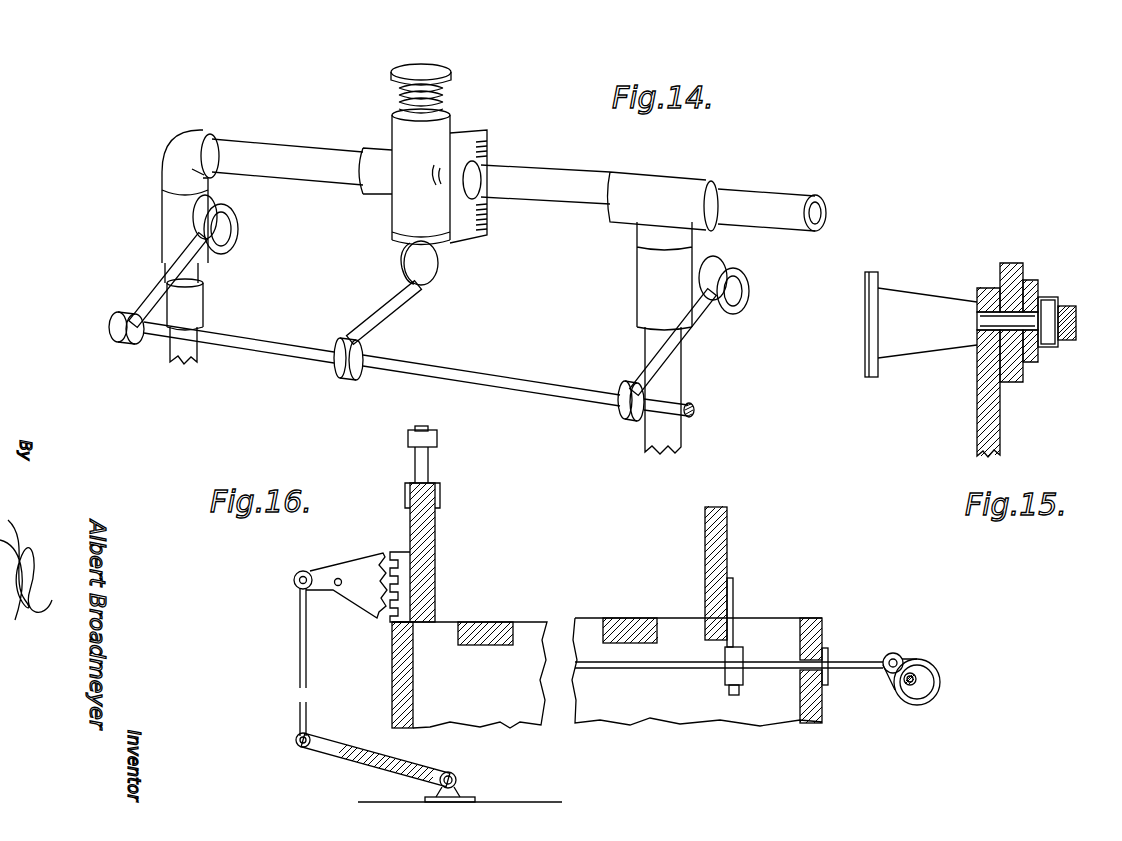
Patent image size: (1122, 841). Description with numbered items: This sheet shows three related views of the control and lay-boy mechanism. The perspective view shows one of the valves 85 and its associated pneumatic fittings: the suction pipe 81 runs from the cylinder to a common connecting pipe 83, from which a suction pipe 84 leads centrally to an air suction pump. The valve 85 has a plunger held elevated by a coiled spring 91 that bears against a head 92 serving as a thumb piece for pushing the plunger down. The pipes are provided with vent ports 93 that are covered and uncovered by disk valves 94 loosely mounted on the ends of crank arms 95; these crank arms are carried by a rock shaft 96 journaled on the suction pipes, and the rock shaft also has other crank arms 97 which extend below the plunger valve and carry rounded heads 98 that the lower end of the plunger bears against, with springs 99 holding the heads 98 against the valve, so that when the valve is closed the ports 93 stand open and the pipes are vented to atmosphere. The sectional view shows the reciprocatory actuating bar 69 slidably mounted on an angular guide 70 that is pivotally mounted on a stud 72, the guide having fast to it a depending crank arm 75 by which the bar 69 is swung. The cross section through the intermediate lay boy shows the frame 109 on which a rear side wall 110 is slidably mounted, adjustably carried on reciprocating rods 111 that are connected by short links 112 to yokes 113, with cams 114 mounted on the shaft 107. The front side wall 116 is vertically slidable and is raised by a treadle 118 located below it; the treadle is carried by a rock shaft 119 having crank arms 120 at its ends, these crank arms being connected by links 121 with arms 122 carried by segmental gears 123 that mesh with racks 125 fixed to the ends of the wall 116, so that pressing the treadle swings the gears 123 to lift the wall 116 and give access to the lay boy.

In FIG. 15, the reciprocatory actuating bar 69 is at (1025, 272).
In FIG. 15, the angular guide 70 is at (1040, 293).
In FIG. 15, the stud 72 is at (1066, 311).
In FIG. 15, the depending crank arm 75 is at (978, 413).
In FIG. 14, the suction pipe 81 is at (175, 357).
In FIG. 14, the connecting pipe 83 is at (295, 153).
In FIG. 14, the suction pipe 84 is at (652, 430).
In FIG. 14, the valve 85 is at (395, 212).
In FIG. 14, the coiled spring 91 is at (444, 91).
In FIG. 14, the head 92 is at (437, 73).
In FIG. 14, the vent ports 93 is at (230, 230).
In FIG. 14, the disk valves 94 is at (196, 215).
In FIG. 14, the crank arms 95 is at (168, 268).
In FIG. 14, the rock shaft 96 is at (541, 383).
In FIG. 14, the crank arms 97 is at (386, 313).
In FIG. 14, the rounded heads 98 is at (433, 266).
In FIG. 14, the springs 99 is at (489, 153).
In FIG. 16, the shaft 107 is at (904, 680).
In FIG. 16, the frame 109 is at (812, 716).
In FIG. 16, the rear side wall 110 is at (730, 532).
In FIG. 16, the reciprocating rods 111 is at (662, 668).
In FIG. 16, the short links 112 is at (887, 651).
In FIG. 16, the yokes 113 is at (934, 664).
In FIG. 16, the cams 114 is at (930, 683).
In FIG. 16, the front side wall 116 is at (436, 553).
In FIG. 16, the treadle 118 is at (360, 763).
In FIG. 16, the rock shaft 119 is at (458, 778).
In FIG. 16, the crank arms 120 is at (332, 742).
In FIG. 16, the links 121 is at (299, 648).
In FIG. 16, the arms 122 is at (306, 560).
In FIG. 16, the segmental gears 123 is at (364, 560).
In FIG. 16, the racks 125 is at (404, 586).